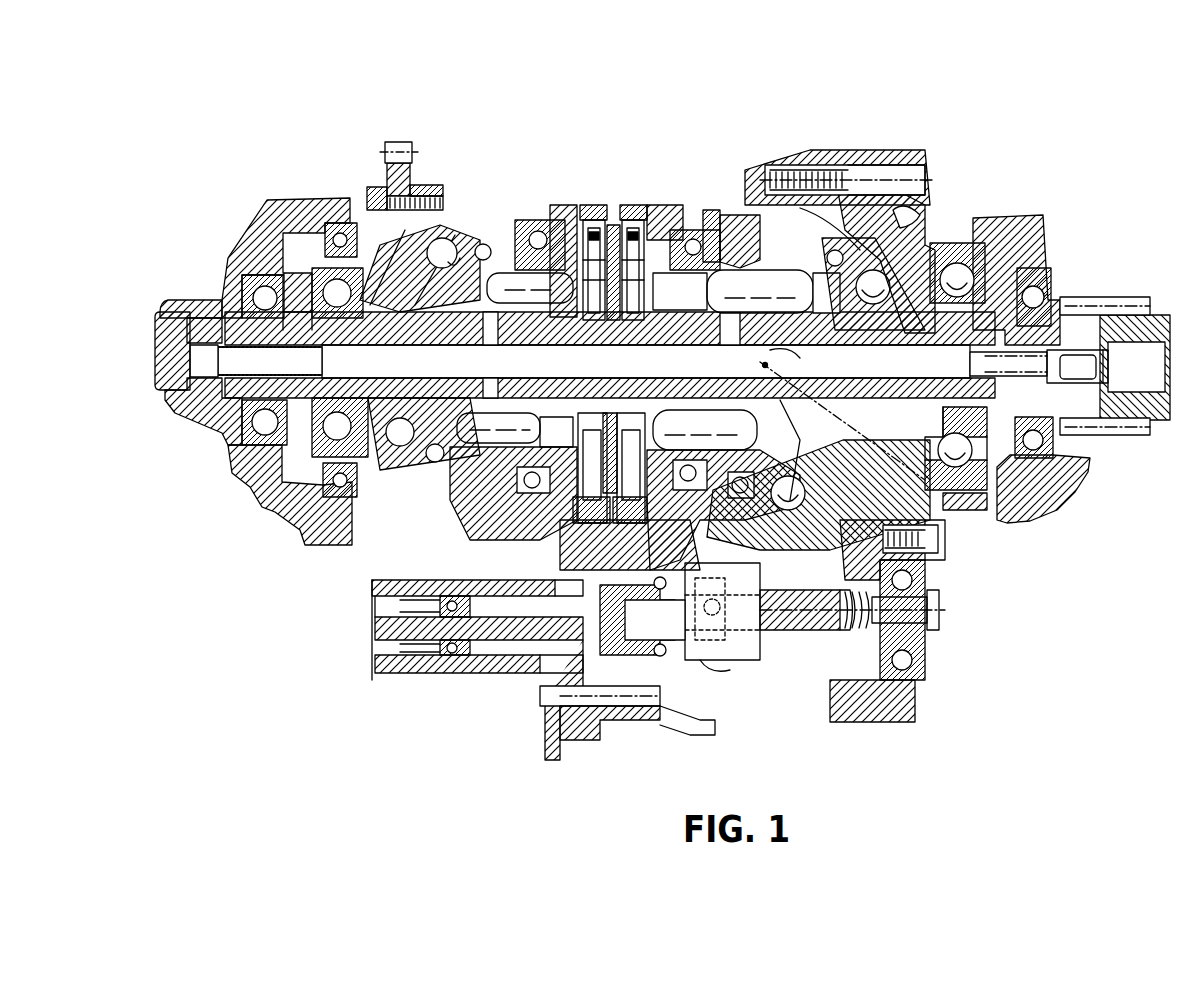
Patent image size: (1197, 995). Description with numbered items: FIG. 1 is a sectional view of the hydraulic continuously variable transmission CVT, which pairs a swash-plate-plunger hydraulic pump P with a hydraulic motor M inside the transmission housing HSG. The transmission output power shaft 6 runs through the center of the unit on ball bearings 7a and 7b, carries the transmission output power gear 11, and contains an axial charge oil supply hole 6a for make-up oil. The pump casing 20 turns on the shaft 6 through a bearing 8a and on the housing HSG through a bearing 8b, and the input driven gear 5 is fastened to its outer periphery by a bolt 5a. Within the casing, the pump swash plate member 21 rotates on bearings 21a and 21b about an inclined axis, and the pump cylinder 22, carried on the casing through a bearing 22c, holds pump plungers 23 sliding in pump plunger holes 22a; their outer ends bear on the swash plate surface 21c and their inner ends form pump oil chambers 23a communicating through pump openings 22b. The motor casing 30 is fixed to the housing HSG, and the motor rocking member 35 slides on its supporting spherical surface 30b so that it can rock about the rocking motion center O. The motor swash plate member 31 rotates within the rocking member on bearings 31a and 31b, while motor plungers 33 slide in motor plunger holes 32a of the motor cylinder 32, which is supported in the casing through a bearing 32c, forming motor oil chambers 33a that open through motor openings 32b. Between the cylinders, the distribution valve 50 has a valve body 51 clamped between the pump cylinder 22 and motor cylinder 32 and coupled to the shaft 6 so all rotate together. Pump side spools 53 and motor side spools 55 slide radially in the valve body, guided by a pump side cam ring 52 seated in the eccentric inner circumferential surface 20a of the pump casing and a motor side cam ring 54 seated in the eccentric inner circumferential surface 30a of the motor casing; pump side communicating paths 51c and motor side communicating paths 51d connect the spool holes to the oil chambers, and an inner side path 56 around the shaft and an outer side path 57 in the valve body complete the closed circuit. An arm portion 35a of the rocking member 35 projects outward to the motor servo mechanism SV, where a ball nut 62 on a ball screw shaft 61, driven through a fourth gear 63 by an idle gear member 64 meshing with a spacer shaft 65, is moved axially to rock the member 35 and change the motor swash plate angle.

The input driven gear 5 is at (392, 178).
The bolt 5a is at (372, 192).
The transmission output power shaft 6 is at (836, 335).
The charge oil supply hole 6a is at (412, 370).
The ball bearing 7a is at (235, 426).
The ball bearing 7b is at (1050, 441).
The bearing 8a is at (255, 489).
The bearing 8b is at (300, 539).
The transmission output power gear 11 is at (1120, 304).
The pump casing 20 is at (520, 491).
The eccentric inner circumferential surface 20a is at (575, 534).
The pump swash plate member 21 is at (455, 283).
The bearing 21a is at (447, 238).
The bearing 21b is at (485, 244).
The swash plate surface 21c is at (445, 448).
The pump cylinder 22 is at (478, 491).
The pump plunger hole 22a is at (515, 270).
The pump opening 22b is at (500, 341).
The bearing 22c is at (528, 501).
The pump plunger 23 is at (515, 358).
The pump oil chamber 23a is at (558, 432).
The motor casing 30 is at (860, 160).
The eccentric inner circumferential surface 30a is at (620, 531).
The supporting spherical surface 30b is at (850, 230).
The motor swash plate member 31 is at (785, 456).
The bearing 31a is at (905, 236).
The bearing 31b is at (822, 246).
The motor cylinder 32 is at (727, 240).
The motor plunger hole 32a is at (742, 272).
The motor opening 32b is at (712, 333).
The bearing 32c is at (710, 210).
The motor plunger 33 is at (733, 360).
The motor oil chamber 33a is at (680, 291).
The motor rocking member 35 is at (830, 536).
The arm portion 35a is at (768, 641).
The distribution valve 50 is at (690, 205).
The valve body 51 is at (568, 205).
The pump side communicating path 51c is at (560, 325).
The motor side communicating path 51d is at (645, 325).
The pump side cam ring 52 is at (596, 205).
The pump side spool 53 is at (585, 485).
The motor side cam ring 54 is at (657, 205).
The motor side spool 55 is at (645, 486).
The inner side path 56 is at (607, 325).
The outer side path 57 is at (633, 205).
The ball screw shaft 61 is at (830, 629).
The ball nut 62 is at (725, 669).
The fourth gear 63 is at (612, 579).
The idle gear member 64 is at (590, 726).
The spacer shaft 65 is at (500, 673).
The transmission housing HSG is at (275, 193).
The hydraulic pump P is at (450, 141).
The motor M is at (948, 141).
The hydraulic continuously variable transmission CVT is at (1070, 131).
The rocking motion center O is at (842, 414).
The motor servo mechanism SV is at (465, 711).